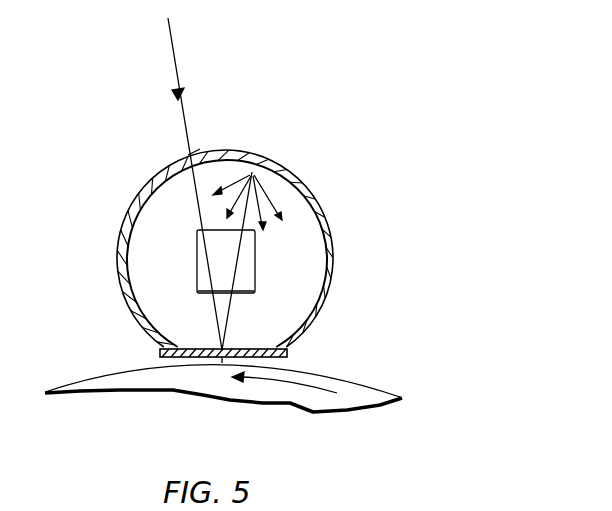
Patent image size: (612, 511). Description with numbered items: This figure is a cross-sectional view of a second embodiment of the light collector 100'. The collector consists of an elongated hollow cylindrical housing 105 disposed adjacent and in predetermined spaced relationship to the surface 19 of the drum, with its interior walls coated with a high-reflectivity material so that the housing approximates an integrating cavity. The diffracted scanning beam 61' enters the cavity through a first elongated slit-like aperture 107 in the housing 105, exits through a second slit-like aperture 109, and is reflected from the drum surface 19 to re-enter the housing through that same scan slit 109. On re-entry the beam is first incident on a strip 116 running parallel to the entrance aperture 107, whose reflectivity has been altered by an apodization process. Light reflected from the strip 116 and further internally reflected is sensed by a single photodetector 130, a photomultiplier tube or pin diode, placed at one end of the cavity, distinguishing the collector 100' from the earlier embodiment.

The diffracted scanning beam 61' is at (195, 184).
The first elongated slit-like aperture 107 is at (195, 157).
The strip 116 is at (257, 172).
The light collector 100' is at (369, 166).
The photodetector 130 is at (255, 283).
The hollow cylindrical housing 105 is at (325, 303).
The second slit-like aperture 109 is at (228, 347).
The surface 19 is at (362, 383).